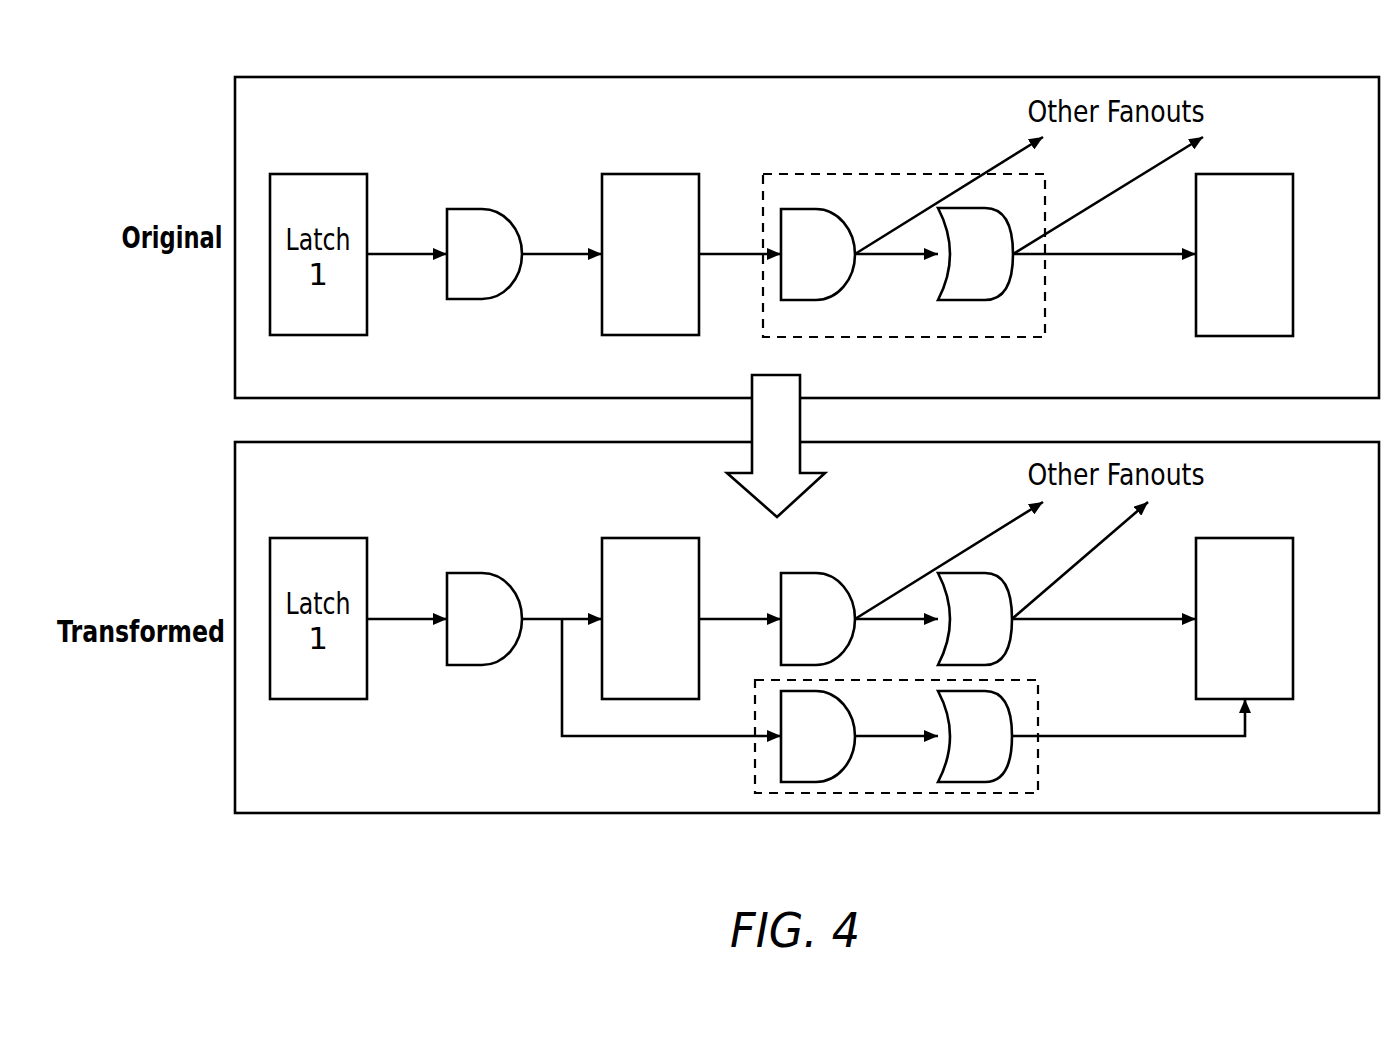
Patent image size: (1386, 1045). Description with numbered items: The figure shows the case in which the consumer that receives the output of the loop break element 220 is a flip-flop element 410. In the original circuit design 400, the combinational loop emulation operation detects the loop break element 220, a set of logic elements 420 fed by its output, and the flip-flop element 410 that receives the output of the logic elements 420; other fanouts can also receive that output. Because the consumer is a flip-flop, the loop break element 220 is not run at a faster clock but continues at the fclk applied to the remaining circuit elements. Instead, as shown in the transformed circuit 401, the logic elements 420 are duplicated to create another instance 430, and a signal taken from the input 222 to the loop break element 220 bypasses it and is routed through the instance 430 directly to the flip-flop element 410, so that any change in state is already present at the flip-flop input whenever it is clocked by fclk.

The original circuit design 400 is at (266, 62).
The transformed circuit 401 is at (266, 430).
The loop break element 220 is at (651, 173).
The input to the loop break element 222 is at (537, 617).
The flip-flop element 410 is at (1245, 173).
The set of logic elements 420 is at (820, 173).
The instance of the logic elements 430 is at (780, 680).